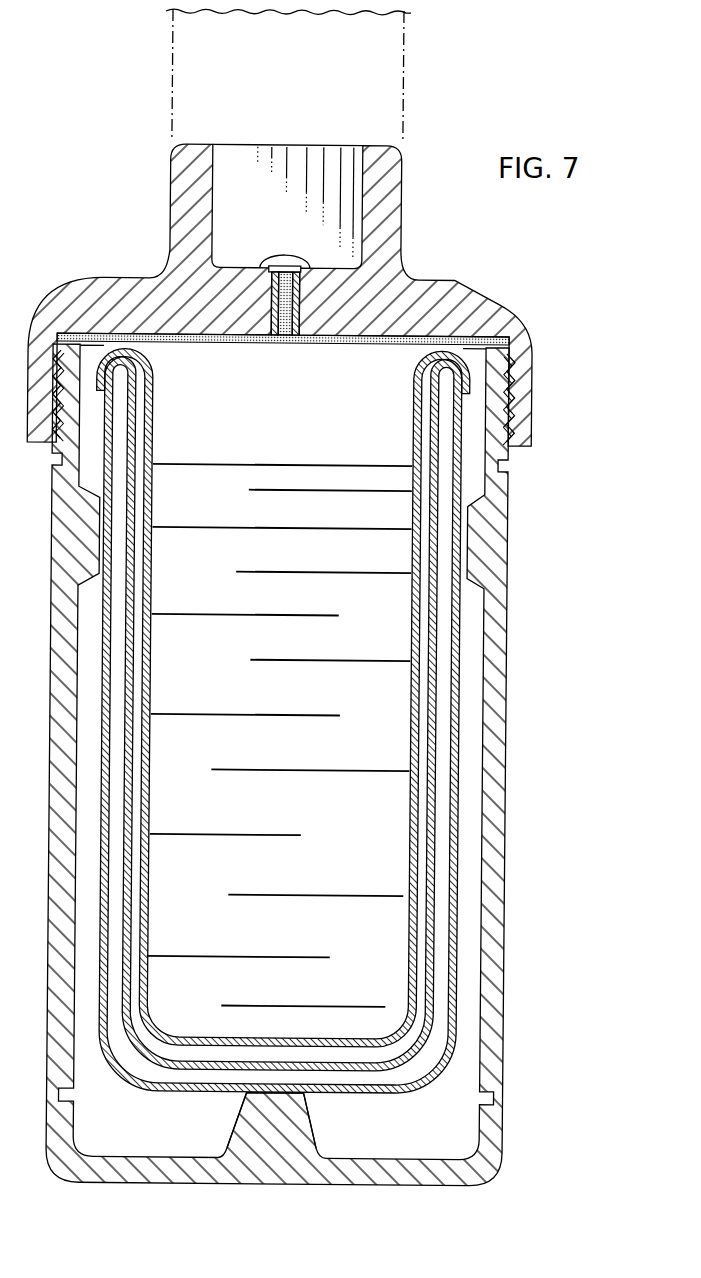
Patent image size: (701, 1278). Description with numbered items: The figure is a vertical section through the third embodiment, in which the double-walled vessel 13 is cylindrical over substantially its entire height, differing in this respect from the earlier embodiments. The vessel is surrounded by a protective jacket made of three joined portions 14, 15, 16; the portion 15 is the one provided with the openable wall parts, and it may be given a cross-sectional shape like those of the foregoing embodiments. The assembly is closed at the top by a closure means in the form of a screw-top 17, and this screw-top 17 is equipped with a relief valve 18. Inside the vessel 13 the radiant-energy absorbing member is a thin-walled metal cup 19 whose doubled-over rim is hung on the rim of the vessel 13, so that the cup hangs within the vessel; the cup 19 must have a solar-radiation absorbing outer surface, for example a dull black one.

The double-walled vessel 13 is at (459, 631).
The portion of protective jacket 14 is at (511, 415).
The portion of protective jacket 15 is at (509, 526).
The portion of protective jacket 16 is at (386, 1164).
The screw-top 17 is at (489, 301).
The relief valve 18 is at (279, 258).
The thin-walled metal cup 19 is at (414, 852).